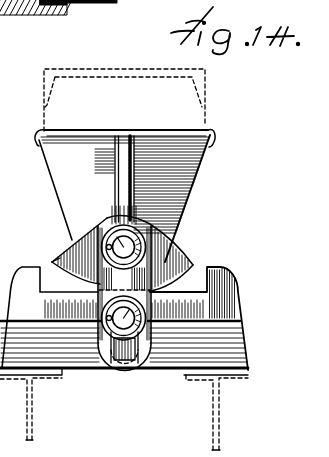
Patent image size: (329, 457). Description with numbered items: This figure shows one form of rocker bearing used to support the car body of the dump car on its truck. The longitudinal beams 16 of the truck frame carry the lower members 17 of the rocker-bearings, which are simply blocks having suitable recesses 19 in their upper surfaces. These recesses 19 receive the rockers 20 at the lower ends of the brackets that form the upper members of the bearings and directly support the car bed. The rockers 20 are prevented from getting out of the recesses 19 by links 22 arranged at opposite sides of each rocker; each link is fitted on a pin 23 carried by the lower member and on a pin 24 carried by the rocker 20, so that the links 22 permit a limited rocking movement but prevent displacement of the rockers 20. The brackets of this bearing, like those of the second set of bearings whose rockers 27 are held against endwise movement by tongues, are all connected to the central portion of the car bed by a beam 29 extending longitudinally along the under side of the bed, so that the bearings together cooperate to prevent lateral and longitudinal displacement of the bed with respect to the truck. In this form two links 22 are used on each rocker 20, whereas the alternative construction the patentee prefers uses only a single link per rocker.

The longitudinal beams 16 is at (30, 420).
The lower members of rocker-bearings 17 is at (152, 318).
The recesses 19 is at (56, 284).
The rockers 20 is at (172, 246).
The links 22 is at (67, 250).
The pins 23 is at (150, 296).
The pins 24 is at (106, 221).
The rockers 27 is at (177, 174).
The beam 29 is at (188, 115).